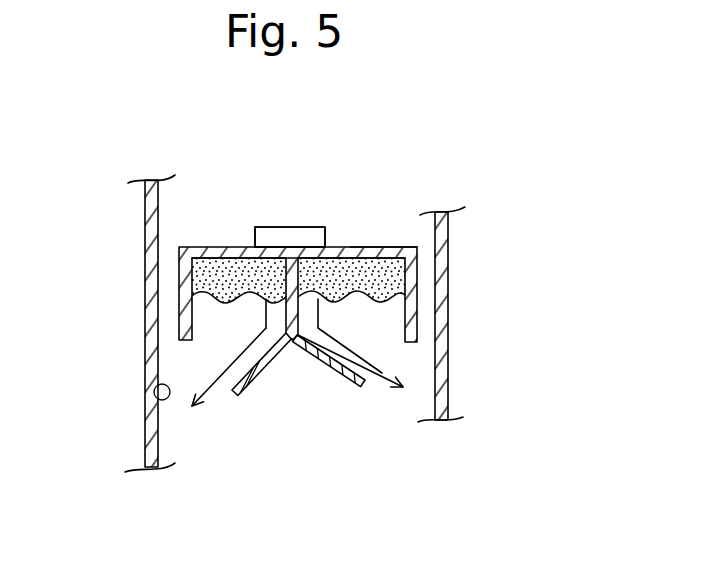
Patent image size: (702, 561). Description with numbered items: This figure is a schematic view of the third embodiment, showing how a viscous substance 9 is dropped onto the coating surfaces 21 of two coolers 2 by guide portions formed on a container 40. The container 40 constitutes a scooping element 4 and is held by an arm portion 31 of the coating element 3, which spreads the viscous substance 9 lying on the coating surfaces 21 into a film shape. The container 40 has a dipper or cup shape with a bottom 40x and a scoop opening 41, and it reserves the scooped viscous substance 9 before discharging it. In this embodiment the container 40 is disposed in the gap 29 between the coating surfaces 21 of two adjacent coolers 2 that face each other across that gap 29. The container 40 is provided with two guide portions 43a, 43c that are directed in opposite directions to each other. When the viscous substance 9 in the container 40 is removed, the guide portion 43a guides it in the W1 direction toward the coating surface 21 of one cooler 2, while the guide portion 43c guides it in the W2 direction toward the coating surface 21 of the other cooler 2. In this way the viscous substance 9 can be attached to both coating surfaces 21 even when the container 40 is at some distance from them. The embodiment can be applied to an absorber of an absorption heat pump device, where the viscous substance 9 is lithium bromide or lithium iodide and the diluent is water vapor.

The cooler 2 is at (145, 310).
The coating element 3 is at (290, 237).
The scooping element 4 is at (189, 243).
The viscous substance 9 is at (217, 262).
The coating surface 21 is at (158, 400).
The gap 29 is at (420, 237).
The arm portion 31 is at (275, 227).
The container 40 is at (287, 249).
The bottom of the container 40x is at (388, 251).
The scoop opening 41 is at (223, 323).
The guide portion 43a is at (317, 368).
The guide portion 43c is at (258, 372).
The W1 direction W1 is at (377, 375).
The W2 direction W2 is at (213, 384).